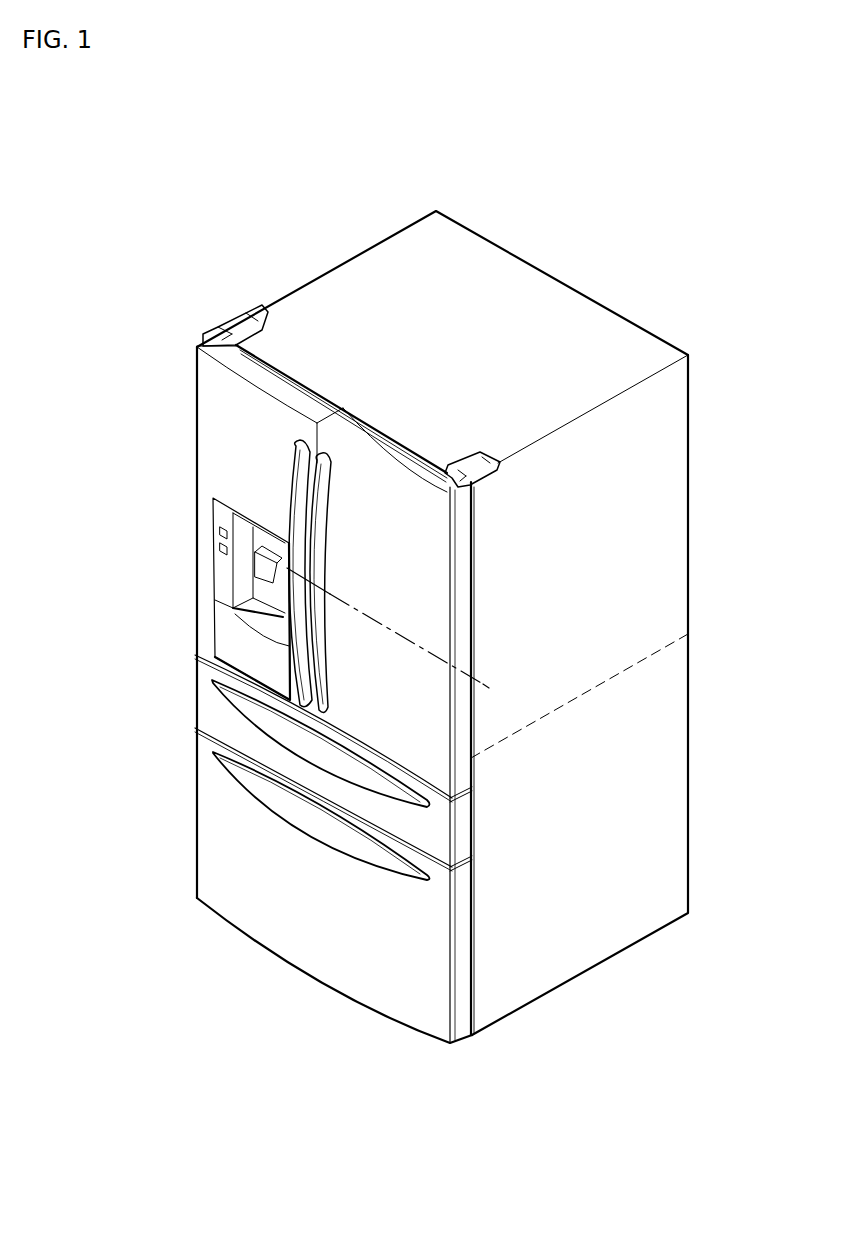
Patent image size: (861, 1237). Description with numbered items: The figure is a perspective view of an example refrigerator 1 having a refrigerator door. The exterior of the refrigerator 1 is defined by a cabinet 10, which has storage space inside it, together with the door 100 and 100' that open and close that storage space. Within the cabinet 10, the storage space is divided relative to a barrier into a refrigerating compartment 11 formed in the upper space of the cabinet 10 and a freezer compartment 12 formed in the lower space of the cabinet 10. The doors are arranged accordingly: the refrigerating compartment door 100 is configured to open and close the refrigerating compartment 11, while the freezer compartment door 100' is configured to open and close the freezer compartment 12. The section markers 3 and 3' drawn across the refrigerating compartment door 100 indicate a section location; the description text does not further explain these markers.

The refrigerator 1 is at (292, 230).
The cabinet 10 is at (585, 299).
The refrigerating compartment 11 is at (708, 357).
The freezer compartment 12 is at (708, 637).
The refrigerating compartment door 100 is at (325, 613).
The freezer compartment door 100' is at (275, 780).
The section line 3 is at (379, 580).
The section line 3' is at (494, 640).